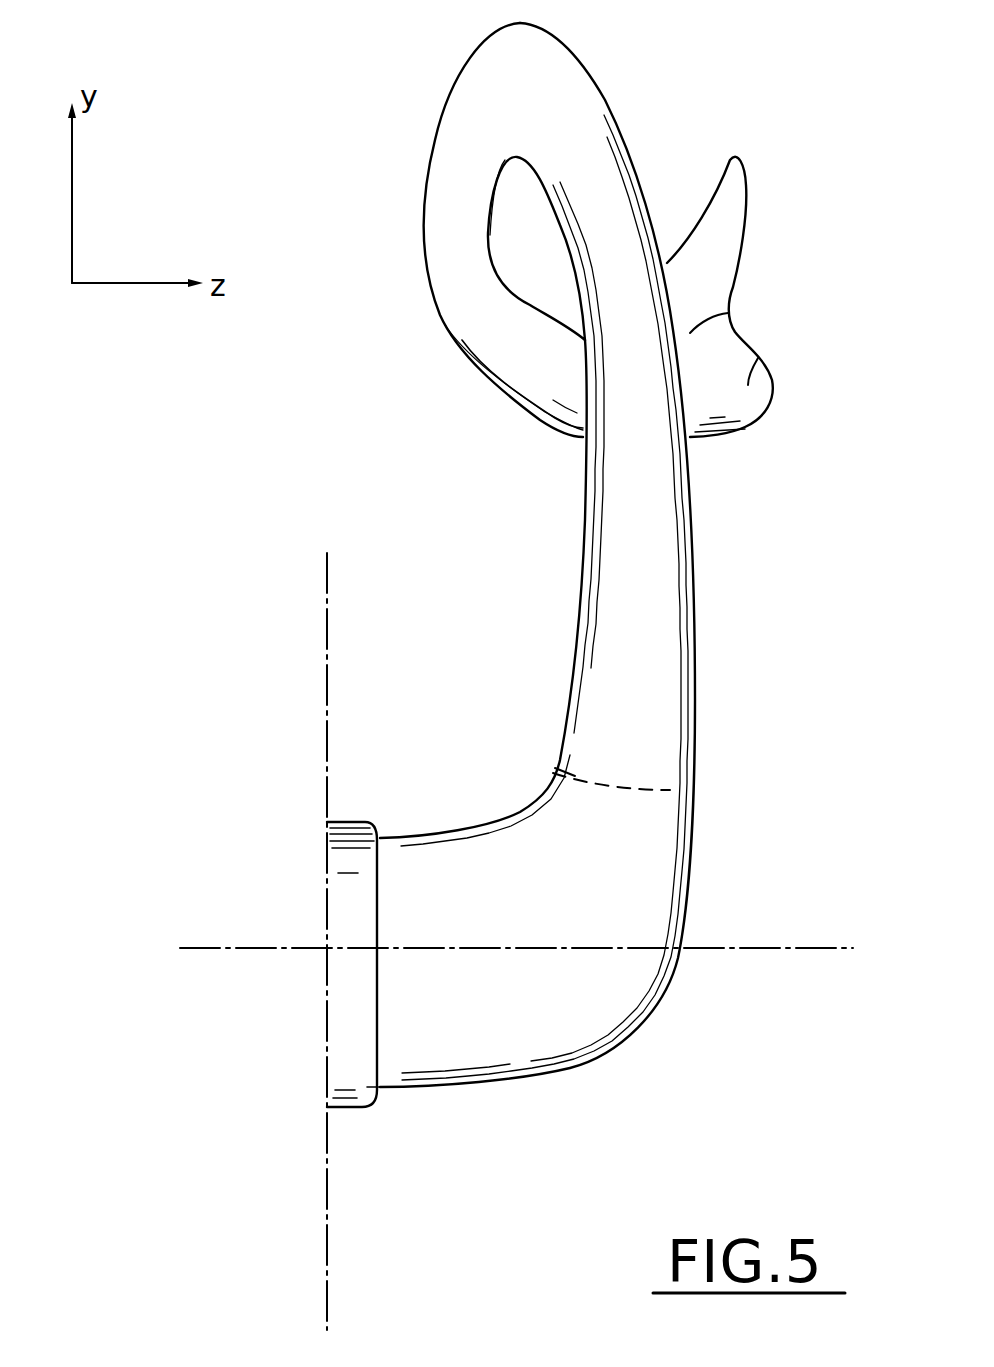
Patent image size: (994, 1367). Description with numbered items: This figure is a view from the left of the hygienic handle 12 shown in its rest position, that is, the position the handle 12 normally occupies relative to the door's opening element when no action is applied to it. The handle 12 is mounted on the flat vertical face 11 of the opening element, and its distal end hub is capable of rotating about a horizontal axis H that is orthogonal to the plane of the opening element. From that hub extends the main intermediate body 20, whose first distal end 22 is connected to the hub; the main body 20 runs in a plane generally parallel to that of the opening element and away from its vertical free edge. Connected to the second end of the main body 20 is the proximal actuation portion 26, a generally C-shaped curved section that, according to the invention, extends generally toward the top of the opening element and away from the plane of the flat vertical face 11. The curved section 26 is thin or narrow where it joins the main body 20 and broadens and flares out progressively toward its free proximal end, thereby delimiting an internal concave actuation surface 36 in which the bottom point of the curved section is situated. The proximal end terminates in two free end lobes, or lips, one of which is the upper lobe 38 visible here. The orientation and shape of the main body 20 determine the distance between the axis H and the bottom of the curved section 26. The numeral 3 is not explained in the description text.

The auxiliary element portion 3 is at (758, 358).
The flat vertical face 11 is at (325, 576).
The hygienic handle 12 is at (583, 614).
The main intermediate body 20 is at (706, 646).
The first distal end 22 is at (657, 790).
The proximal actuation portion 26 is at (540, 364).
The internal concave actuation surface 36 is at (728, 313).
The upper lobe 38 is at (733, 210).
The horizontal axis H is at (820, 950).